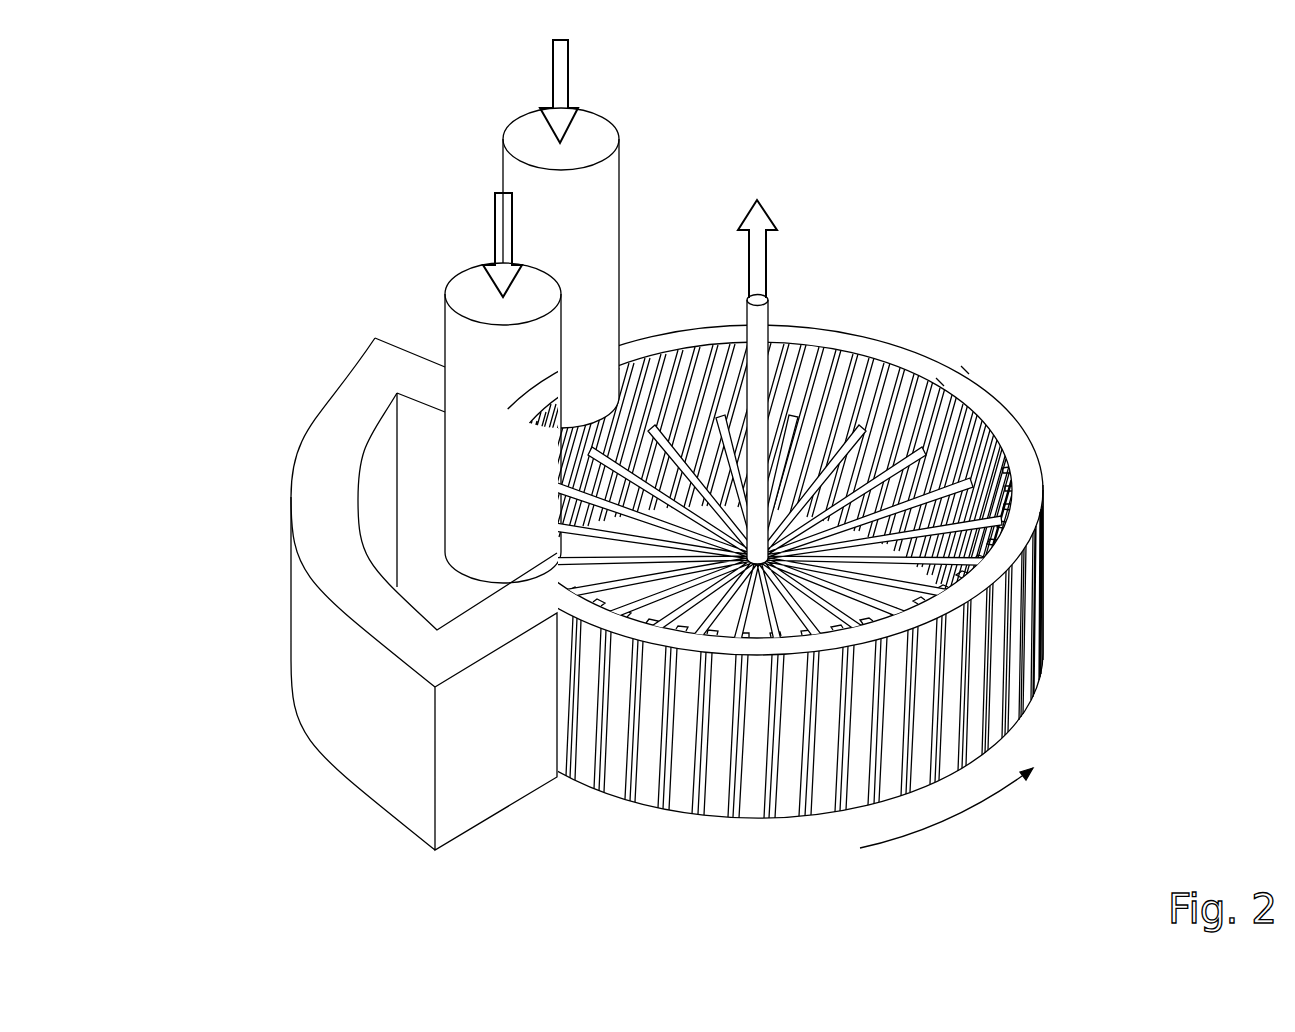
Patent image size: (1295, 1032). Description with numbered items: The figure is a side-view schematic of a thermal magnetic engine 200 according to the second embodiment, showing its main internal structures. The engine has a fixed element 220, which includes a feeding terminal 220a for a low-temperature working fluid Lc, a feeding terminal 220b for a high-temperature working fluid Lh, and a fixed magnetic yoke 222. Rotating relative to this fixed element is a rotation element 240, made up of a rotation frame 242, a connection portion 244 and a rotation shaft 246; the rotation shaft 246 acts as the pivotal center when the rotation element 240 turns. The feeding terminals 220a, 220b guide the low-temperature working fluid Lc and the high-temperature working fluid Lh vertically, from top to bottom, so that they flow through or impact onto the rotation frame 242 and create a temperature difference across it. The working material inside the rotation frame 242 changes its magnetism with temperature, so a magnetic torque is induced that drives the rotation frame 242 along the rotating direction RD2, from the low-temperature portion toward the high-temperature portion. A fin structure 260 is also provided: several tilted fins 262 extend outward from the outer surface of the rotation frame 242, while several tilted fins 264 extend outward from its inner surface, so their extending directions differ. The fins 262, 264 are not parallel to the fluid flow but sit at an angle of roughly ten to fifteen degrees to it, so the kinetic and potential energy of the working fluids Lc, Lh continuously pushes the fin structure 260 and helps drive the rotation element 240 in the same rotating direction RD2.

The thermal magnetic engine 200 is at (943, 121).
The fixed element 220 is at (270, 330).
The feeding terminal 220a is at (530, 143).
The feeding terminal 220b is at (463, 295).
The fixed magnetic yoke 222 is at (364, 365).
The rotation element 240 is at (1170, 437).
The rotation frame 242 is at (1022, 500).
The connection portion 244 is at (963, 570).
The rotation shaft 246 is at (758, 449).
The fin structure 260 is at (1115, 275).
The tilted fins 262 is at (965, 370).
The tilted fins 264 is at (940, 383).
The low-temperature working fluid Lc is at (566, 78).
The high-temperature working fluid Lh is at (502, 213).
The rotating direction RD2 is at (980, 808).